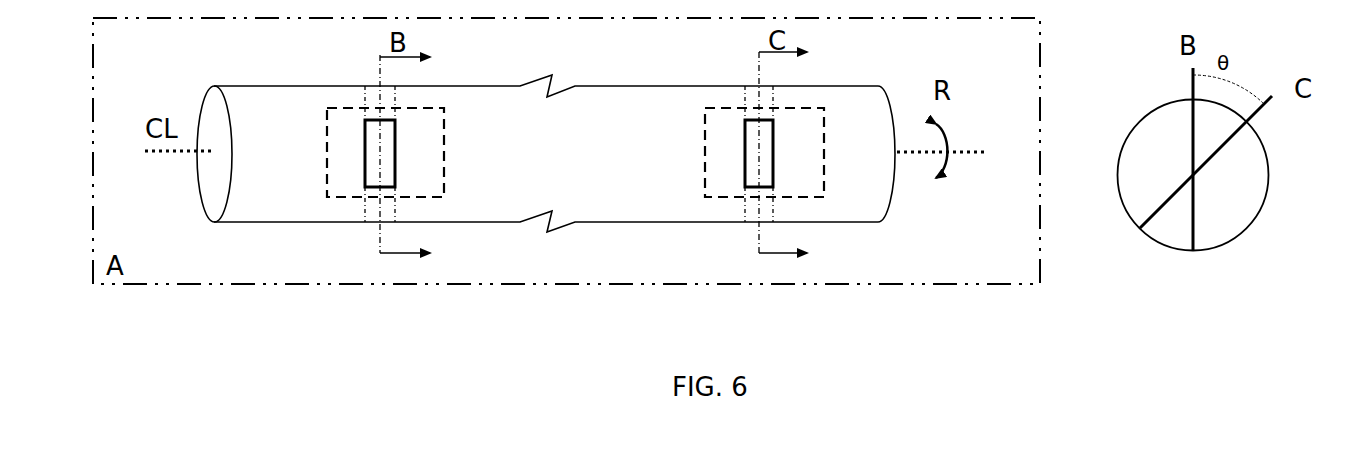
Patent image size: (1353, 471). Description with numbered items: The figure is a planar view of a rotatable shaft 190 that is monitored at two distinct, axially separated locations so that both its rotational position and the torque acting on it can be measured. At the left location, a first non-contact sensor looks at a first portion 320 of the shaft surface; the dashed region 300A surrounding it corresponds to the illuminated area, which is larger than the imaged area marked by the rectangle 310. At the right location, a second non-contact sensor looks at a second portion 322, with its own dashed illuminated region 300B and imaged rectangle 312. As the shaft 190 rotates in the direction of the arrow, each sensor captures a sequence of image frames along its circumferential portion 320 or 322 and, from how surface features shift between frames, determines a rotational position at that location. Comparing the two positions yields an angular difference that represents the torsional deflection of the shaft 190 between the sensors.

The rotatable shaft 190 is at (262, 86).
The first sensor assembly 300A is at (326, 165).
The second sensor assembly 300B is at (704, 165).
The first sensor 310 is at (367, 119).
The first portion 320 is at (397, 100).
The second sensor 312 is at (747, 119).
The second portion 322 is at (775, 100).